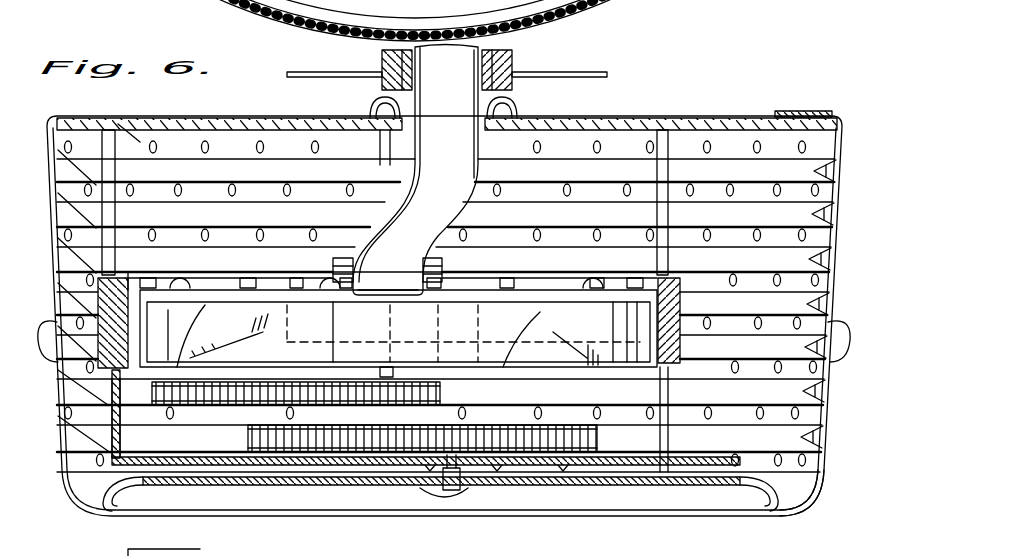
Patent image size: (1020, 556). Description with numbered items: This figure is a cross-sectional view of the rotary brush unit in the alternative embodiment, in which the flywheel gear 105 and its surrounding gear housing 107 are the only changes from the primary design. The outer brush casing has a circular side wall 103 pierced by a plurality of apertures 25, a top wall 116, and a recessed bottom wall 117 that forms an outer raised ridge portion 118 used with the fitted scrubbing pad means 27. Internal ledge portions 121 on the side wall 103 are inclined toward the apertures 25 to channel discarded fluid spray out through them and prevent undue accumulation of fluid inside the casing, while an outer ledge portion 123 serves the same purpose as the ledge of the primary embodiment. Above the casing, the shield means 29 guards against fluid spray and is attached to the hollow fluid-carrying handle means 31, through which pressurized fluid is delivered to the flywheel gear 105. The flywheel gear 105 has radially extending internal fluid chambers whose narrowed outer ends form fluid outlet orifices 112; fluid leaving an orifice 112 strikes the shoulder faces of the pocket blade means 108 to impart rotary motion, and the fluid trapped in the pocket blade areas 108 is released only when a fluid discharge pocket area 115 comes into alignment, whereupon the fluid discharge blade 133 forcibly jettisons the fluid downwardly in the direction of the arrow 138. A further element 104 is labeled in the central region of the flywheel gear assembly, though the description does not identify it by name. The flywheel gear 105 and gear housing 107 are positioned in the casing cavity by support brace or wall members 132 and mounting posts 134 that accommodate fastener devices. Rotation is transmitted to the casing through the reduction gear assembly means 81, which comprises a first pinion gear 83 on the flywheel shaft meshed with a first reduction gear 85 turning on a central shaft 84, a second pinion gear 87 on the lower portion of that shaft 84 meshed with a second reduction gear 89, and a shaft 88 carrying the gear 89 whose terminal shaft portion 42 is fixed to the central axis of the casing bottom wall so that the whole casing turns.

The apertures 25 is at (597, 140).
The scrubbing pad means 27 is at (723, 516).
The shield means 29 is at (572, 72).
The hollow fluid-carrying handle means 31 is at (482, 170).
The terminal shaft portion 42 is at (452, 492).
The reduction gear assembly means 81 is at (150, 520).
The first pinion gear 83 is at (445, 390).
The central shaft 84 is at (290, 412).
The first reduction gear 85 is at (172, 418).
The second pinion gear 87 is at (285, 447).
The shaft 88 is at (435, 485).
The second reduction gear 89 is at (545, 447).
The circular side wall 103 is at (835, 215).
The latch 104 is at (383, 367).
The flywheel gear 105 is at (500, 312).
The gear housing 107 is at (688, 302).
The pocket blade means 108 is at (648, 275).
The fluid outlet orifices 112 is at (338, 318).
The fluid discharge pocket area 115 is at (233, 310).
The top wall 116 is at (700, 118).
The recessed bottom wall 117 is at (645, 488).
The outer raised ridge portion 118 is at (812, 497).
The internal ledge portions 121 is at (830, 252).
The outer ledge portion 123 is at (843, 355).
The support brace or wall members 132 is at (218, 462).
The fluid discharge blade 133 is at (525, 312).
The mounting posts 134 is at (682, 170).
The arrow 138 is at (610, 383).